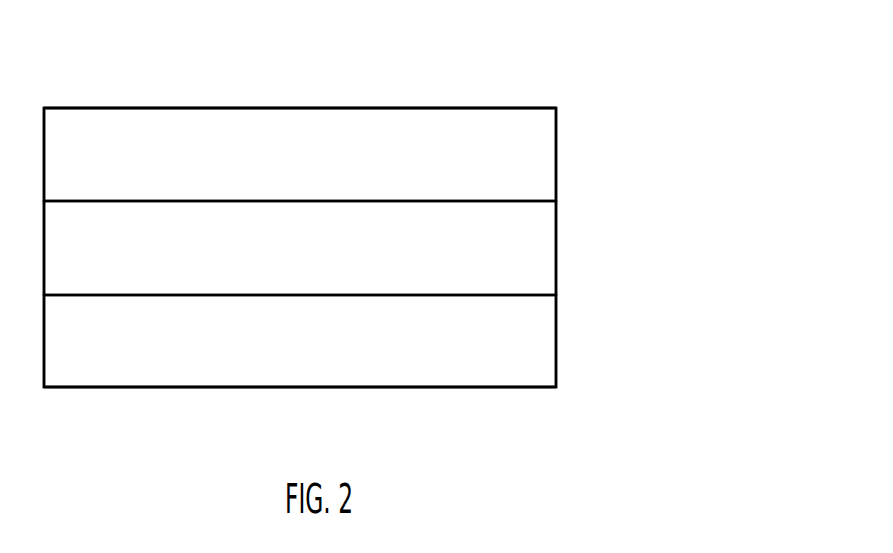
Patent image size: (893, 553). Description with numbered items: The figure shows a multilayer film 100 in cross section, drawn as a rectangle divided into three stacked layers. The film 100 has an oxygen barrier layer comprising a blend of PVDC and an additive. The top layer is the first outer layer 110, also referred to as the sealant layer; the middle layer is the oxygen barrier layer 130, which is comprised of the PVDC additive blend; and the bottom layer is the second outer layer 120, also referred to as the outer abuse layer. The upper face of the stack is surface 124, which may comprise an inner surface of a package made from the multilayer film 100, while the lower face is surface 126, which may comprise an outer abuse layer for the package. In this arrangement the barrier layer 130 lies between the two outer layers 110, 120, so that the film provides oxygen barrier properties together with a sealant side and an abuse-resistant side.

The multilayer film 100 is at (666, 87).
The first outer layer 110 is at (537, 157).
The second outer layer 120 is at (537, 356).
The oxygen barrier layer 130 is at (538, 251).
The surface 124 is at (410, 108).
The surface 126 is at (403, 387).